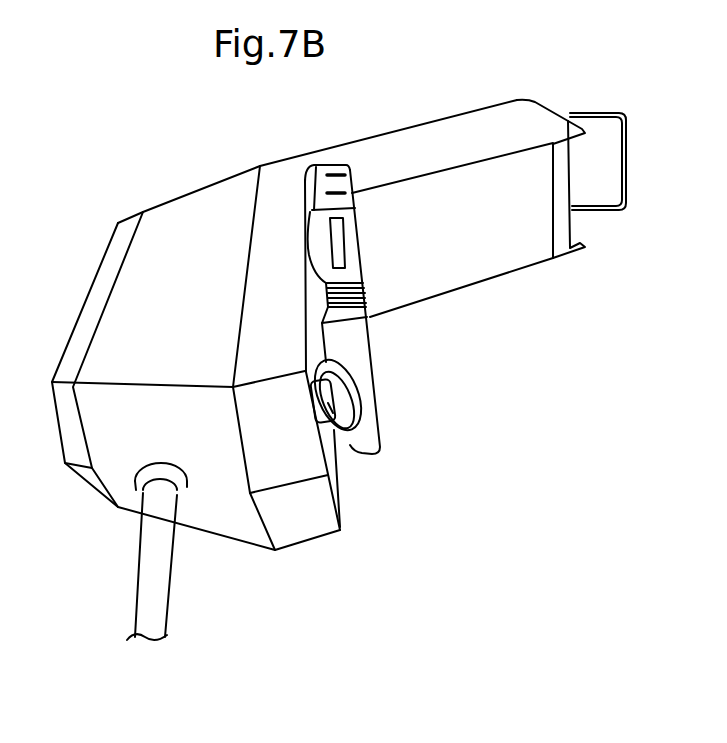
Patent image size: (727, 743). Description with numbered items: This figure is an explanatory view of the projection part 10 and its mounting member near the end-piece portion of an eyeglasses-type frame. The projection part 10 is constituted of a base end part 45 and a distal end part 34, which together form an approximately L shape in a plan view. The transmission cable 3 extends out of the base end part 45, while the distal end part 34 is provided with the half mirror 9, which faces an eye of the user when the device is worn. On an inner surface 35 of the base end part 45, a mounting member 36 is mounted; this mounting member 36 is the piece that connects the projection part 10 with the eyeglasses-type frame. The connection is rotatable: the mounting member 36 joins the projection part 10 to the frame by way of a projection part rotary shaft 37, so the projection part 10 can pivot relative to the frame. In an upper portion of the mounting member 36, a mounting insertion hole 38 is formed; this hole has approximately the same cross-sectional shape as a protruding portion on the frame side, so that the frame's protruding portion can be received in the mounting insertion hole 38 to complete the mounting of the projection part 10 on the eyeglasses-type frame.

The transmission cable 3 is at (150, 552).
The half mirror 9 is at (613, 170).
The projection part 10 is at (287, 153).
The distal end part 34 is at (442, 137).
The inner surface 35 is at (333, 480).
The mounting member 36 is at (390, 390).
The projection part rotary shaft 37 is at (336, 433).
The mounting insertion hole 38 is at (340, 247).
The base end part 45 is at (130, 313).